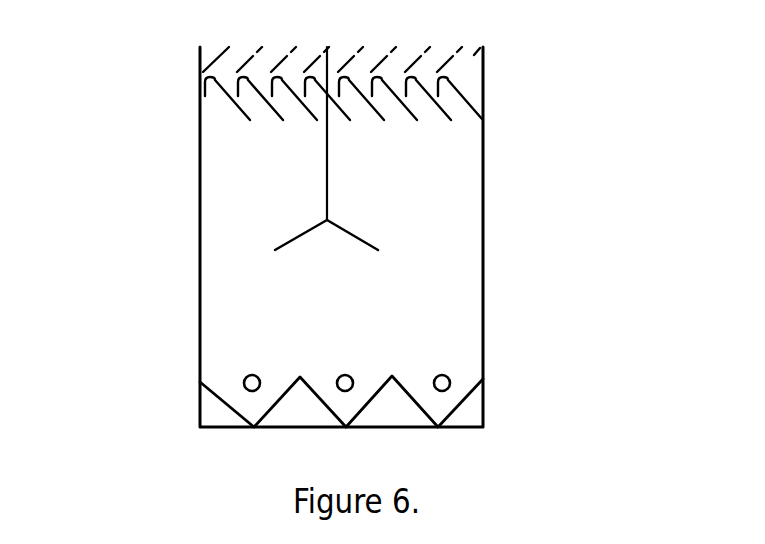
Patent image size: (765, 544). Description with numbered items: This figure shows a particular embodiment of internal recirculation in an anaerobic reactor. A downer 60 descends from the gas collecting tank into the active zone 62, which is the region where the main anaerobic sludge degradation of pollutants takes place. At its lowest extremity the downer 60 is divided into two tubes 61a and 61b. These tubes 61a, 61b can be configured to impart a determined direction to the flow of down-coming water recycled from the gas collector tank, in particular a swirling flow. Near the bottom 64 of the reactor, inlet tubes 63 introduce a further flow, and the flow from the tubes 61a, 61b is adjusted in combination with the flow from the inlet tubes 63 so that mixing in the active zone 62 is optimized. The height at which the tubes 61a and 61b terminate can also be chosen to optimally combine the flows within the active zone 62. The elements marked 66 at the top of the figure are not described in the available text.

The downer 60 is at (327, 178).
The tube 61a is at (299, 233).
The tube 61b is at (353, 233).
The active zone 62 is at (270, 327).
The inlet tubes 63 is at (243, 383).
The bottom of the reactor 64 is at (460, 405).
The hook elements 66 is at (463, 98).